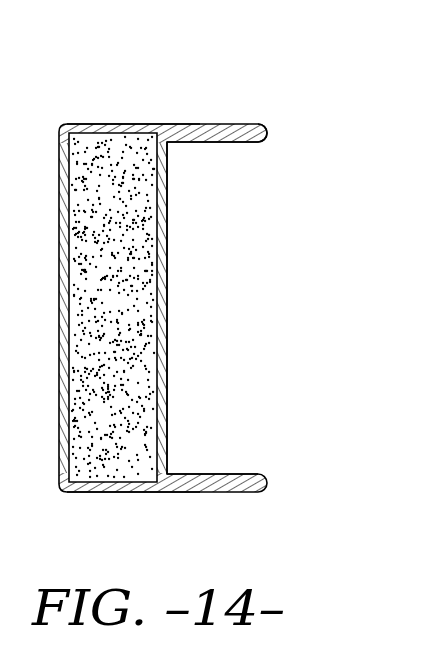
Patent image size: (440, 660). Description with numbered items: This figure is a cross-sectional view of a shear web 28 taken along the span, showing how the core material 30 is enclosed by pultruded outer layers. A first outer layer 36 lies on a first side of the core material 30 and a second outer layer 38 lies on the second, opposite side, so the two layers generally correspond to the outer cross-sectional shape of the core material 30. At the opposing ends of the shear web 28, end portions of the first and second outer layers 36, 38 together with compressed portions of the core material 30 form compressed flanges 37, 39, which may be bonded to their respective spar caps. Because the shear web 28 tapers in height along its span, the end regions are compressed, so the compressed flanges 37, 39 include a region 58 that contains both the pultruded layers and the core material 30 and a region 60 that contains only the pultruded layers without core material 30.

The shear web 28 is at (307, 103).
The core material 30 is at (126, 315).
The first outer layer 36 is at (100, 492).
The compressed flange 37 is at (235, 143).
The second outer layer 38 is at (167, 365).
The compressed flange 39 is at (232, 493).
The region with core material 58 is at (200, 123).
The region without core material 60 is at (255, 123).